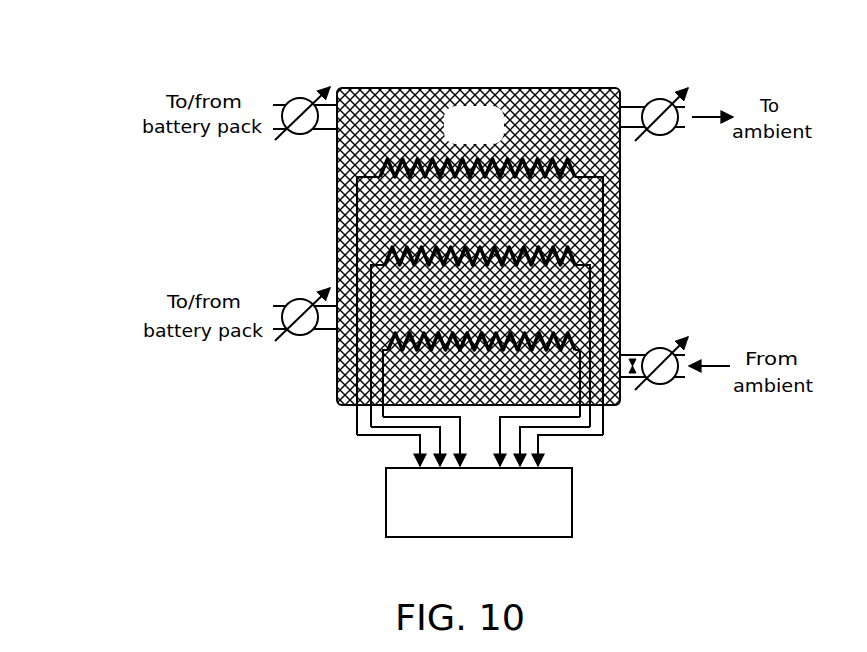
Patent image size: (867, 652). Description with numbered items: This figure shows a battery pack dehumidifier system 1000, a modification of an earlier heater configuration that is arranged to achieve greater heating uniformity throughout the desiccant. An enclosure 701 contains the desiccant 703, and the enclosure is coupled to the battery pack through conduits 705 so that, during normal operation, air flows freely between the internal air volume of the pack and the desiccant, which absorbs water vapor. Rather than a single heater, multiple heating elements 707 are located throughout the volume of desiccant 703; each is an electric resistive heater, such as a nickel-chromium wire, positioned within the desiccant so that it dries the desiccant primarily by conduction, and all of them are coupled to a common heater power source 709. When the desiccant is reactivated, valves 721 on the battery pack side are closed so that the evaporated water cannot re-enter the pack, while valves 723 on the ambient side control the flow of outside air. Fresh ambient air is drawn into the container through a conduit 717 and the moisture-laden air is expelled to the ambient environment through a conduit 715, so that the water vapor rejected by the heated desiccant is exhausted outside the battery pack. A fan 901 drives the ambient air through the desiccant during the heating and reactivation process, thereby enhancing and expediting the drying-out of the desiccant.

The battery thermal management system 1000 is at (138, 212).
The enclosure 701 is at (442, 88).
The desiccant 703 is at (497, 141).
The conduits 705 is at (331, 131).
The heating elements 707 is at (490, 321).
The heater power source 709 is at (597, 507).
The conduits 715 is at (623, 103).
The conduits 717 is at (628, 352).
The valves 721 is at (300, 97).
The valves 723 is at (657, 135).
The fan 901 is at (632, 376).